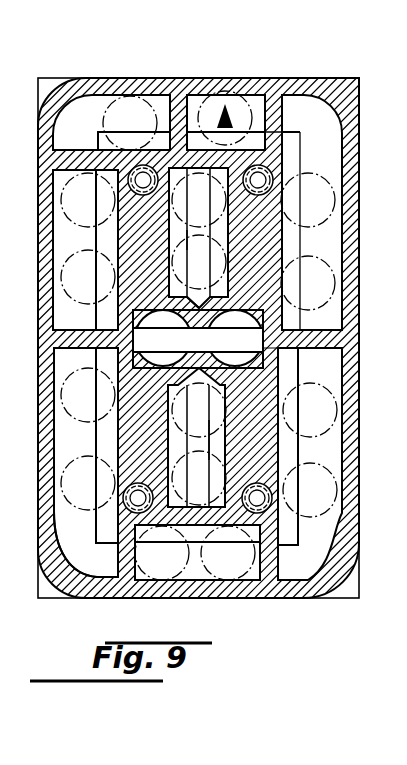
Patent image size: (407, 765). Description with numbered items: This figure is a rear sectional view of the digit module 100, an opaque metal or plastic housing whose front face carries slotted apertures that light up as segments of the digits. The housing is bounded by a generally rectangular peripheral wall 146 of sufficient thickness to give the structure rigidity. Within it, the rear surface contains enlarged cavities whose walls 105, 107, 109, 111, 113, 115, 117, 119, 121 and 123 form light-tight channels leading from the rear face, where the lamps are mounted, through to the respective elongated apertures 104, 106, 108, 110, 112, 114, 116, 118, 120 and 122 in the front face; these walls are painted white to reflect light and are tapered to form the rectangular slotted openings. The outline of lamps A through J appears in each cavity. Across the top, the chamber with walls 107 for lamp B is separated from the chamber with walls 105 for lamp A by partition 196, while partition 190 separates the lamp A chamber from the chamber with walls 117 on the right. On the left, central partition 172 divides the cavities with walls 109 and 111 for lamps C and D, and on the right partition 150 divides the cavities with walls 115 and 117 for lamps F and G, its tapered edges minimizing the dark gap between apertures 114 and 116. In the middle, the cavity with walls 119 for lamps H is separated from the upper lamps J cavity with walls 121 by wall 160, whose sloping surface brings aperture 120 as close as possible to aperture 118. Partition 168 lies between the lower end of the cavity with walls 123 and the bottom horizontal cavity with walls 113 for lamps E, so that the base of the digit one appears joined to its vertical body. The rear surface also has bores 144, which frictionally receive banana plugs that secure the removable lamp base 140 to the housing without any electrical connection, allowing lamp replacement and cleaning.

The digit module 100 is at (272, 72).
The elongated aperture 104 is at (284, 133).
The cavity walls 105 is at (218, 82).
The elongated aperture 106 is at (150, 79).
The cavity walls 107 is at (111, 122).
The elongated aperture 108 is at (96, 238).
The cavity walls 109 is at (45, 238).
The elongated aperture 110 is at (96, 438).
The cavity walls 111 is at (50, 430).
The elongated aperture 112 is at (133, 530).
The cavity walls 113 is at (195, 591).
The elongated aperture 114 is at (298, 438).
The cavity walls 115 is at (359, 452).
The elongated aperture 116 is at (300, 239).
The cavity walls 117 is at (359, 240).
The elongated aperture 118 is at (112, 349).
The cavity walls 119 is at (178, 293).
The elongated aperture 120 is at (179, 254).
The cavity walls 121 is at (180, 238).
The elongated aperture 122 is at (212, 440).
The cavity walls 123 is at (168, 410).
The base 140 is at (42, 484).
The bores 144 is at (143, 196).
The peripheral wall 146 is at (103, 82).
The partition 150 is at (342, 348).
The wall 160 is at (178, 273).
The partition 168 is at (197, 552).
The central partition 172 is at (85, 315).
The partition 190 is at (263, 140).
The partition 196 is at (184, 96).